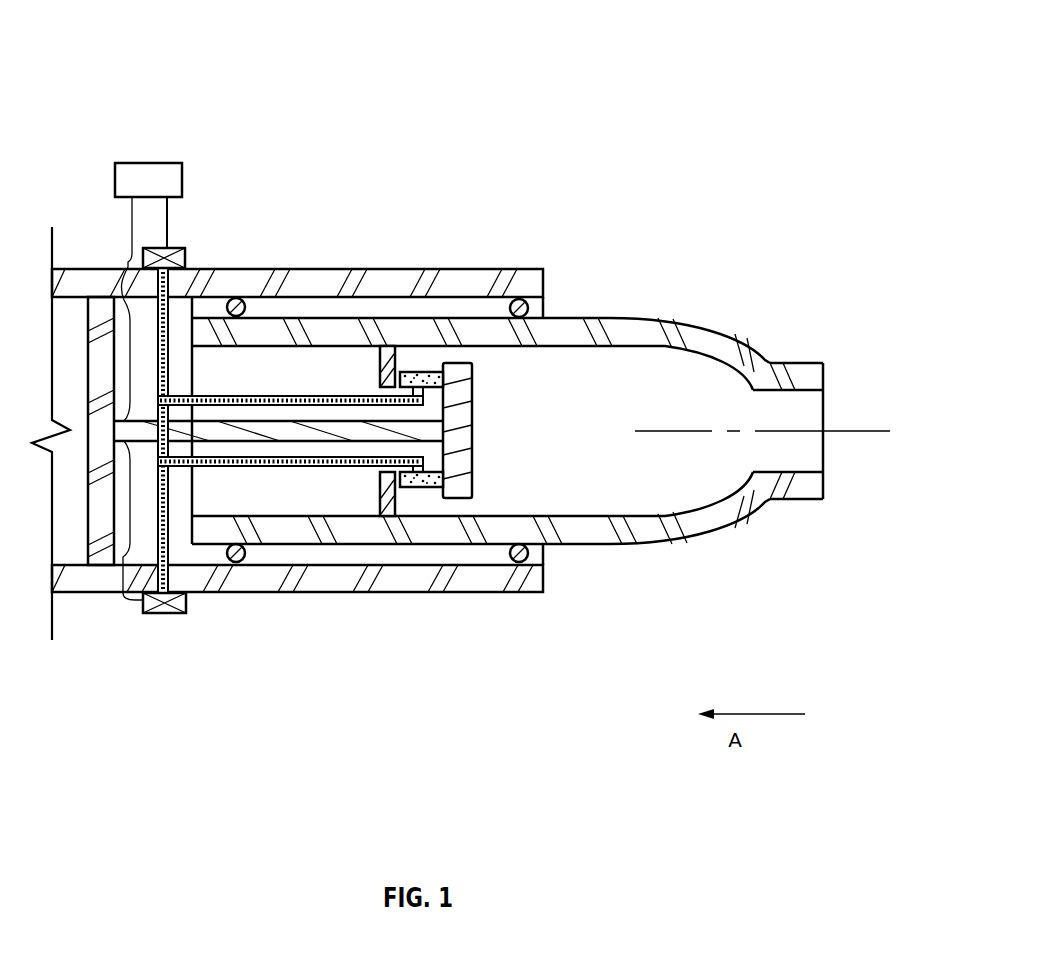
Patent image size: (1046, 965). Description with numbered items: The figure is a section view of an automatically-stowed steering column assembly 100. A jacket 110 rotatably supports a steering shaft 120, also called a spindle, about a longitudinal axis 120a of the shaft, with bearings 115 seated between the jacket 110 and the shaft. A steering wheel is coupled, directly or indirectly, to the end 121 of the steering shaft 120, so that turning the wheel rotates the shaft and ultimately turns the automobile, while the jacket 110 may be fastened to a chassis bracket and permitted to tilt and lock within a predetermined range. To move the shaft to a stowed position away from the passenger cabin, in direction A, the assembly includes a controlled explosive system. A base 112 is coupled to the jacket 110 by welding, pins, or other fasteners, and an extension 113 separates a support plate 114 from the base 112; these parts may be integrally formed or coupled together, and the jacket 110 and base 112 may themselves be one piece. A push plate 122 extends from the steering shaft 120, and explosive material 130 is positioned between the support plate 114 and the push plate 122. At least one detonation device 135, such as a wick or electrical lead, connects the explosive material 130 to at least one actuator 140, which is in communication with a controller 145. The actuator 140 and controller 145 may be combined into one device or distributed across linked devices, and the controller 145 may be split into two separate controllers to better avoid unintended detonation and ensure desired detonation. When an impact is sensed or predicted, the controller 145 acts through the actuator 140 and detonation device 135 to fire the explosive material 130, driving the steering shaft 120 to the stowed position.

The automatically-stowed steering column assembly 100 is at (614, 90).
The jacket 110 is at (475, 282).
The base 112 is at (93, 517).
The extension 113 is at (292, 432).
The support plate 114 is at (477, 378).
The bearings 115 is at (530, 305).
The steering shaft 120 is at (633, 330).
The longitudinal axis 120a is at (857, 436).
The end of the steering shaft 121 is at (782, 336).
The push plate 122 is at (380, 365).
The explosive material 130 is at (412, 368).
The detonation device 135 is at (272, 396).
The actuator 140 is at (188, 257).
The controller 145 is at (145, 177).